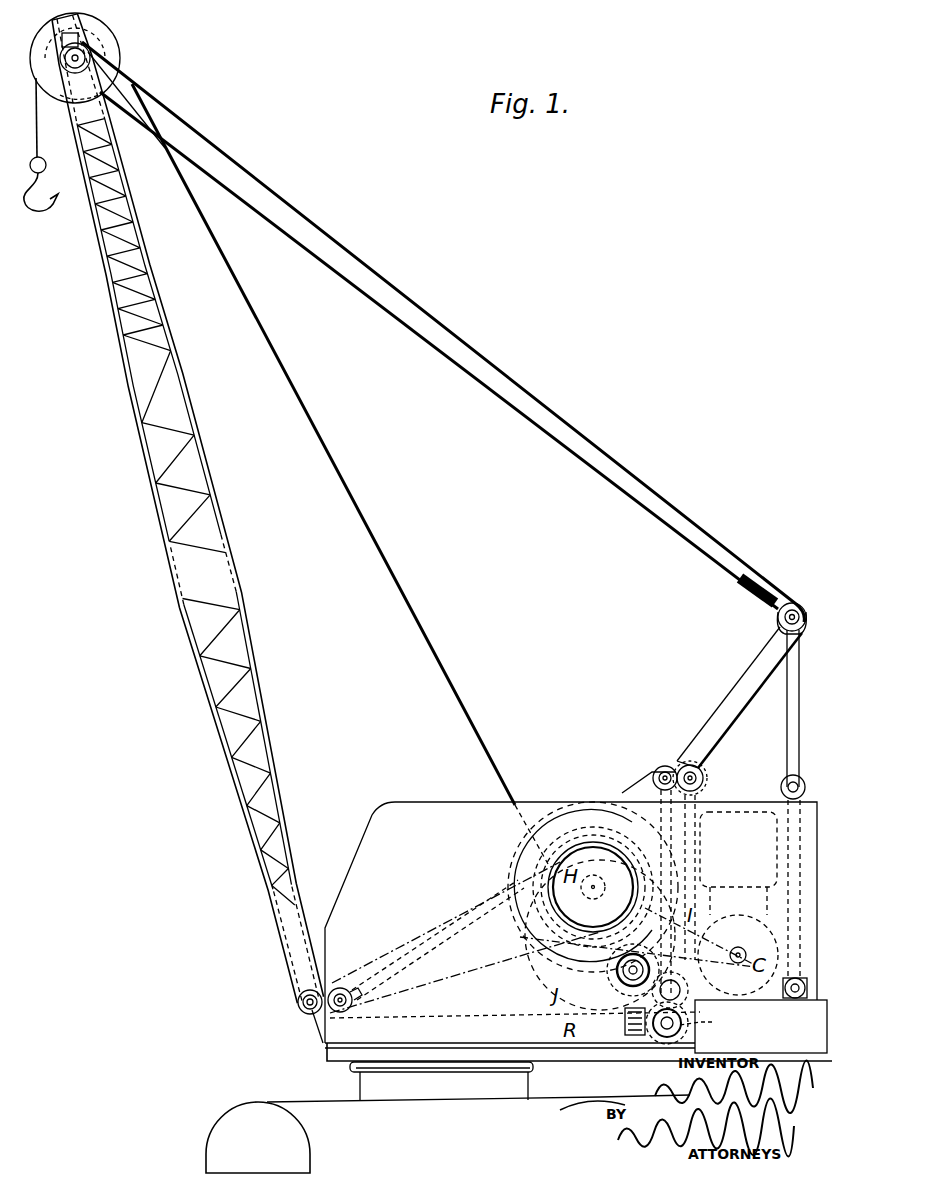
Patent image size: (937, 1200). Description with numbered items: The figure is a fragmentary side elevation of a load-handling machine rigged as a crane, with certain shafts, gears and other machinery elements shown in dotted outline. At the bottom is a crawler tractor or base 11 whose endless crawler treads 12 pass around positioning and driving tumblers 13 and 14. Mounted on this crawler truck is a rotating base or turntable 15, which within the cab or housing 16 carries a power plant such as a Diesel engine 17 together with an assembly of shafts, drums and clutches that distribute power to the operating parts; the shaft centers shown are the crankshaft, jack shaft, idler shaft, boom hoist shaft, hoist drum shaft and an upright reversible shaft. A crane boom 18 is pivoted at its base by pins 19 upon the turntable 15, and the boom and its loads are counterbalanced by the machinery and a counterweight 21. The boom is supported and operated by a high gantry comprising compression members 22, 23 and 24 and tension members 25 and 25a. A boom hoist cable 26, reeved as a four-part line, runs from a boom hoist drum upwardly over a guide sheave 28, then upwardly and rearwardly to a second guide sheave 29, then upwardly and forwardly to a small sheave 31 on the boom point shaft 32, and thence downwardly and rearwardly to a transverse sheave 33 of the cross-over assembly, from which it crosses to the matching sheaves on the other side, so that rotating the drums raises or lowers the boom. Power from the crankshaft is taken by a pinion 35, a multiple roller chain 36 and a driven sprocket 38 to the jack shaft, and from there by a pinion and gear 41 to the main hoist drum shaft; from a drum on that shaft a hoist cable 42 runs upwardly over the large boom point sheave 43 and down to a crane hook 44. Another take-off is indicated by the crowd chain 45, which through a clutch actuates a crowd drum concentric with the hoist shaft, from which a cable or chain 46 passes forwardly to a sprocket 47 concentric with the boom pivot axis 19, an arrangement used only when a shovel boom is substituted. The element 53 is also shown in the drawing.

The crawler tractor or base 11 is at (362, 1088).
The endless tracks or crawler treads 12 is at (296, 1088).
The positioning and driving tumbler 13 is at (311, 1143).
The positioning and driving tumbler 14 is at (592, 1107).
The rotating base or turntable 15 is at (565, 1058).
The cab or housing 16 is at (445, 802).
The power plant (Diesel engine) 17 is at (732, 812).
The crane boom 18 is at (197, 430).
The pins (boom pivot axis) 19 is at (303, 1009).
The counterweight 21 is at (800, 1055).
The compression member 22 is at (447, 932).
The compression member 23 is at (656, 775).
The compression member 24 is at (735, 684).
The tension member 25 is at (801, 789).
The tension member 25a is at (800, 732).
The boom hoist cable 26 is at (770, 709).
The guide sheave 28 is at (697, 772).
The second guide sheave 29 is at (797, 600).
The small sheave 31 is at (102, 93).
The boom point shaft 32 is at (92, 52).
The transverse sheave of cross-over assembly 33 is at (740, 590).
The pinion 35 is at (730, 956).
The multiple roller chain 36 is at (688, 975).
The driven sprocket 38 is at (612, 998).
The gear 41 is at (532, 840).
The hoist cable 42 is at (368, 537).
The large boom point sheave 43 is at (58, 30).
The crane hook 44 is at (42, 207).
The crowd chain 45 is at (556, 952).
The crowd cable or chain 46 is at (440, 982).
The sprocket 47 is at (301, 993).
The control line 53 is at (434, 1018).